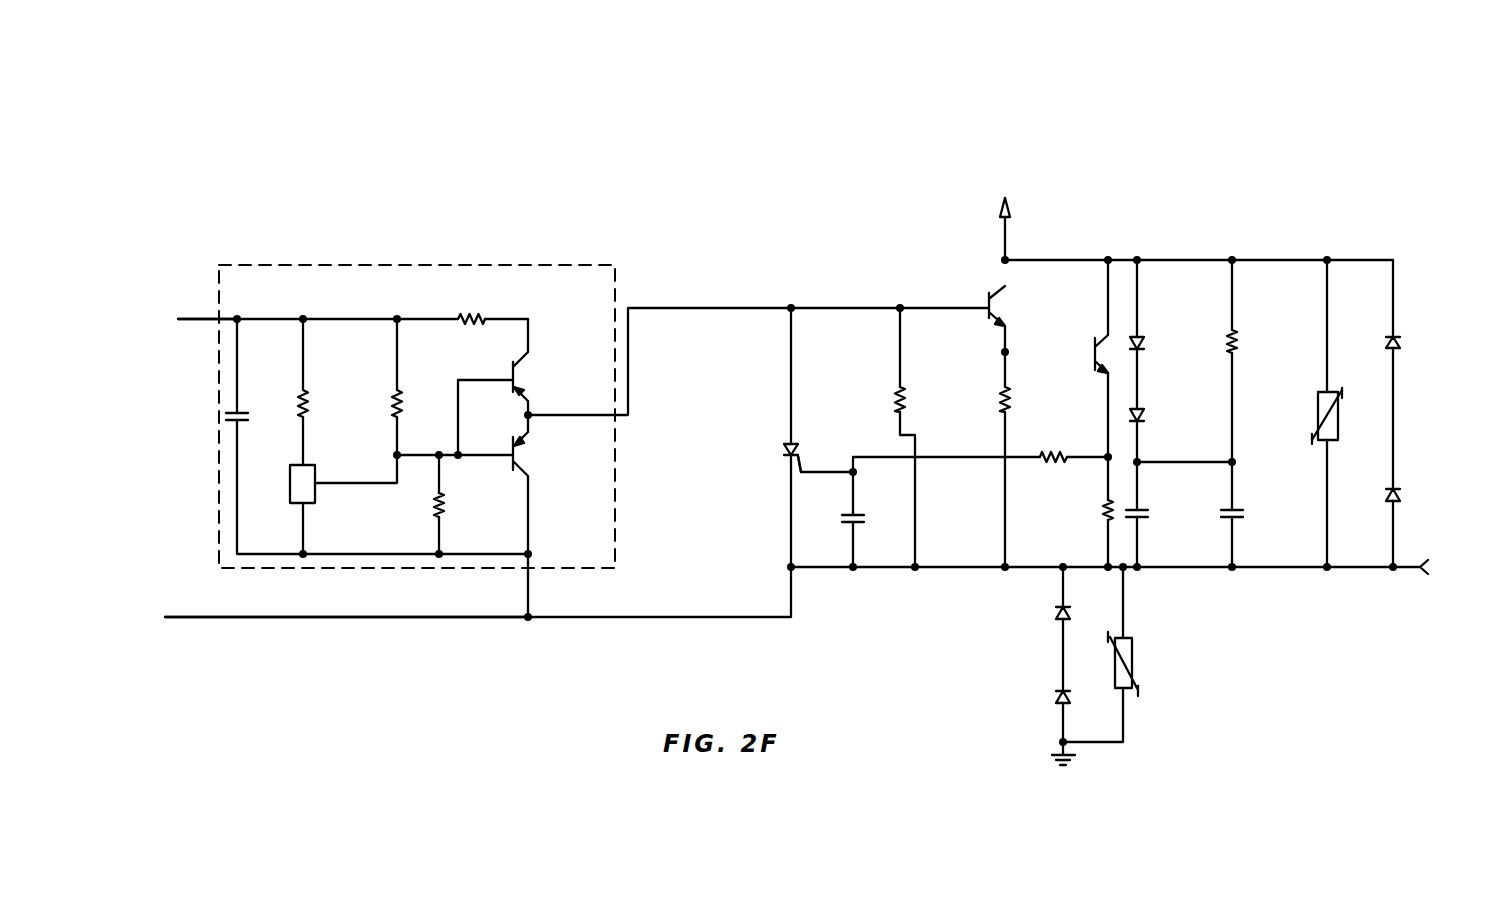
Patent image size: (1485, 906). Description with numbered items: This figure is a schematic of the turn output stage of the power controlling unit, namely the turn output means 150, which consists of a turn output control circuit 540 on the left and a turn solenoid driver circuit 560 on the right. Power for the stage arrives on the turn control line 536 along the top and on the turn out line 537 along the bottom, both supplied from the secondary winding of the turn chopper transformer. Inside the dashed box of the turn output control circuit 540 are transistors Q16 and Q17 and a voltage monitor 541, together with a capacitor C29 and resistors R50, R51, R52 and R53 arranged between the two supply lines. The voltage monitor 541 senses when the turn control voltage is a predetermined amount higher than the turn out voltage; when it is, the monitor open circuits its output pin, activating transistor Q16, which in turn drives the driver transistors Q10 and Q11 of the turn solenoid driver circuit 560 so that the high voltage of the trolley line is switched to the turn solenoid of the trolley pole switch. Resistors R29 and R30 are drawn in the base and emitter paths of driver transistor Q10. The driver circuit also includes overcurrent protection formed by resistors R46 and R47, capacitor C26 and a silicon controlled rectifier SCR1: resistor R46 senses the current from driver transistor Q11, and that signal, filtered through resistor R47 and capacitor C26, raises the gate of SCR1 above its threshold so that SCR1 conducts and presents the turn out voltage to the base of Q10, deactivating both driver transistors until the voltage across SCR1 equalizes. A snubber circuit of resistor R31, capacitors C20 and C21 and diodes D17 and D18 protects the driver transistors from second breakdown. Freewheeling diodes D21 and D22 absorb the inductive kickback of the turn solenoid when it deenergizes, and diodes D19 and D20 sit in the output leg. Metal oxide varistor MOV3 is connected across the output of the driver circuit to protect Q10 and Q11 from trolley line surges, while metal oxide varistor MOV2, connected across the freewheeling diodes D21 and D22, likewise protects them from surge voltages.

The turn control line 536 is at (195, 318).
The turn out line 537 is at (190, 619).
The turn output control circuit 540 is at (598, 223).
The turn solenoid driver circuit 560 is at (968, 215).
The turn output means 150 is at (1074, 178).
The capacitor C29 is at (250, 421).
The resistor R50 is at (310, 402).
The resistor R51 is at (405, 400).
The resistor R52 is at (447, 508).
The resistor R53 is at (473, 311).
The voltage monitor 541 is at (315, 497).
The transistor Q16 is at (530, 380).
The transistor Q17 is at (530, 455).
The silicon controlled rectifier SCR1 is at (790, 446).
The capacitor C26 is at (858, 522).
The resistor R29 is at (893, 398).
The resistor R30 is at (998, 398).
The driver transistor Q10 is at (1000, 312).
The driver transistor Q11 is at (1097, 348).
The resistor R47 is at (1055, 452).
The resistor R46 is at (1100, 513).
The diode D17 is at (1143, 342).
The diode D18 is at (1143, 415).
The capacitor C20 is at (1148, 514).
The resistor R31 is at (1240, 336).
The capacitor C21 is at (1243, 514).
The metal oxide varistor MOV3 is at (1318, 405).
The diode D19 is at (1400, 343).
The diode D20 is at (1400, 495).
The freewheeling diode D21 is at (1055, 613).
The freewheeling diode D22 is at (1055, 697).
The metal oxide varistor MOV2 is at (1135, 655).